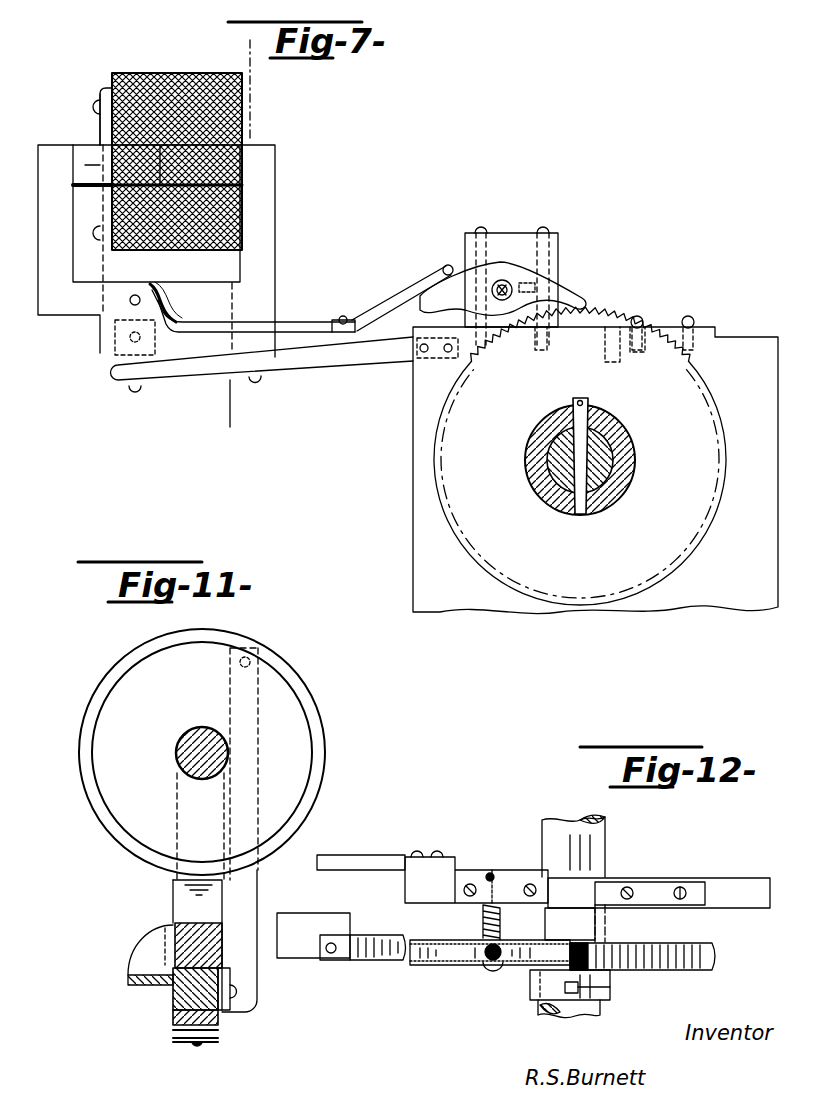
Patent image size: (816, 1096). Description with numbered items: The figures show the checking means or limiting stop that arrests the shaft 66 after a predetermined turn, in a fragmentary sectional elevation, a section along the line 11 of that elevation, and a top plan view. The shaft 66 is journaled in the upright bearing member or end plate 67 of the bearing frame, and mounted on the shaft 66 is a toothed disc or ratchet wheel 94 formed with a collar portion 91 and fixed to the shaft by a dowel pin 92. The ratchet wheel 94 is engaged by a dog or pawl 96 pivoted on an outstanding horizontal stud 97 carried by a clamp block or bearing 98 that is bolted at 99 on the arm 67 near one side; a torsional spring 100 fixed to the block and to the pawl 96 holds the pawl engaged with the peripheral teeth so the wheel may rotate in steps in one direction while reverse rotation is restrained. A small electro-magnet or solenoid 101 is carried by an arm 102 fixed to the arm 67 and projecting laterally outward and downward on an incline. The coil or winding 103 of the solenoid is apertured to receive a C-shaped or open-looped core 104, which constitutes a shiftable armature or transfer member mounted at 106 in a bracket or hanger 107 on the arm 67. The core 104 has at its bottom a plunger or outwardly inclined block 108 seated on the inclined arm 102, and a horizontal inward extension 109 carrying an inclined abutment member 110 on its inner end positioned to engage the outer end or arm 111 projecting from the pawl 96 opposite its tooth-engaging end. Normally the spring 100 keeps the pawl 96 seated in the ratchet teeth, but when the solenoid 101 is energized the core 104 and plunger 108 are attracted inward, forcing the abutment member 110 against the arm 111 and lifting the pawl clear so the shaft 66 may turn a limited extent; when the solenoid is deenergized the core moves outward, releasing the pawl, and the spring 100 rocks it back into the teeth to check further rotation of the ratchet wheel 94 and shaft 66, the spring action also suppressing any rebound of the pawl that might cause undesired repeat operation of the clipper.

In FIG. 7, the section line 11— 11 is at (253, 73).
In FIG. 7, the shaft 66 is at (632, 476).
In FIG. 12, the shaft 66 is at (605, 840).
In FIG. 7, the upright bearing member or arm 67 is at (410, 555).
In FIG. 12, the upright bearing member or arm 67 is at (722, 887).
In FIG. 7, the collar portion 91 is at (615, 437).
In FIG. 12, the collar portion 91 is at (530, 990).
In FIG. 7, the dowel pin 92 is at (587, 398).
In FIG. 12, the dowel pin 92 is at (610, 992).
In FIG. 7, the ratchet wheel 94 is at (688, 350).
In FIG. 12, the ratchet wheel 94 is at (707, 968).
In FIG. 7, the pawl 96 is at (545, 290).
In FIG. 12, the pawl 96 is at (547, 950).
In FIG. 7, the horizontal stud 97 is at (503, 280).
In FIG. 12, the horizontal stud 97 is at (490, 968).
In FIG. 7, the clamp block 98 is at (556, 235).
In FIG. 12, the clamp block 98 is at (465, 905).
In FIG. 7, the bolts 99 is at (480, 232).
In FIG. 12, the bolts 99 is at (528, 884).
In FIG. 7, the torsional spring 100 is at (537, 285).
In FIG. 12, the torsional spring 100 is at (516, 922).
In FIG. 7, the solenoid 101 is at (108, 80).
In FIG. 11, the solenoid 101 is at (324, 722).
In FIG. 7, the arm 102 is at (166, 386).
In FIG. 11, the arm 102 is at (175, 1025).
In FIG. 12, the arm 102 is at (335, 862).
In FIG. 7, the coil 103 is at (165, 72).
In FIG. 11, the coil 103 is at (110, 712).
In FIG. 7, the core 104 is at (262, 238).
In FIG. 11, the core 104 is at (178, 756).
In FIG. 7, the mounting 106 is at (150, 290).
In FIG. 11, the mounting 106 is at (172, 952).
In FIG. 7, the bracket or hanger 107 is at (106, 122).
In FIG. 11, the bracket or hanger 107 is at (248, 905).
In FIG. 7, the plunger 108 is at (127, 363).
In FIG. 11, the plunger 108 is at (185, 990).
In FIG. 7, the horizontal inward extension 109 is at (292, 322).
In FIG. 7, the inclined abutment member 110 is at (392, 300).
In FIG. 12, the inclined abutment member 110 is at (350, 960).
In FIG. 7, the outer end or arm of pawl 111 is at (447, 266).
In FIG. 12, the outer end or arm of pawl 111 is at (432, 953).